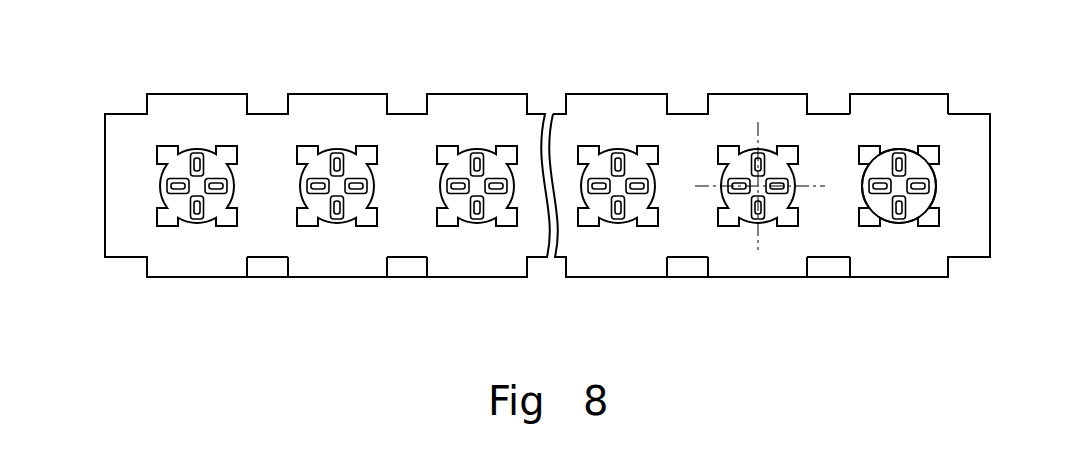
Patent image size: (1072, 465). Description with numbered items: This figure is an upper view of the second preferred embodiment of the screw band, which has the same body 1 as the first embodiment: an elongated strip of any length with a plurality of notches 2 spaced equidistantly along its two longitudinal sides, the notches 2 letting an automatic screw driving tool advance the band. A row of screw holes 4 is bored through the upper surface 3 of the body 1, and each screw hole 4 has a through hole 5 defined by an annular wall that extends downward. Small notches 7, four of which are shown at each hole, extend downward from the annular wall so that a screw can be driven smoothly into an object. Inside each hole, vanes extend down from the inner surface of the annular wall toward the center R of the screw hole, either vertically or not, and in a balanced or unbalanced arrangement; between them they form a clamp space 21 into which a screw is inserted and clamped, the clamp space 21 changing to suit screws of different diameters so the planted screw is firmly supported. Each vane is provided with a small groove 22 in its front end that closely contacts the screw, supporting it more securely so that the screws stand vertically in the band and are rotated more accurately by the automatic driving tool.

The body 1 is at (587, 182).
The notches 2 is at (688, 113).
The upper surface 3 is at (937, 107).
The screw holes 4 is at (940, 175).
The through hole 5 is at (878, 170).
The small notches 7 is at (158, 151).
The clamp space 21 is at (208, 158).
The small groove 22 is at (197, 162).
The center of the screw hole R is at (766, 178).